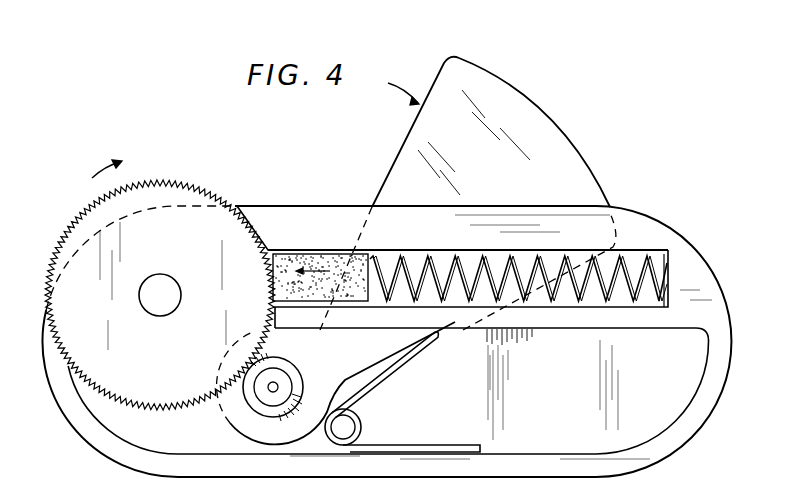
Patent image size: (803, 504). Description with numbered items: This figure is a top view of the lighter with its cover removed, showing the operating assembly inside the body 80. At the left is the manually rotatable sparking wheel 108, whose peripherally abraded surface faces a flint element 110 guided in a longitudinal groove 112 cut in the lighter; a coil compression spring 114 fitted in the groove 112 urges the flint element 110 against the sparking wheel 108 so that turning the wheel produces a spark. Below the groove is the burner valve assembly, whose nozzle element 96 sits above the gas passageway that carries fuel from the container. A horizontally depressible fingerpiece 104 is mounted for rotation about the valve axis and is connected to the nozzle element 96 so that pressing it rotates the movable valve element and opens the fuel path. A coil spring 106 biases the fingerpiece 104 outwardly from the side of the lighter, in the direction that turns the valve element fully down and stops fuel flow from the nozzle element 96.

The body 80 is at (730, 292).
The nozzle element 96 is at (253, 400).
The fingerpiece 104 is at (407, 137).
The coil spring 106 is at (363, 425).
The sparking wheel 108 is at (79, 222).
The flint element 110 is at (287, 262).
The longitudinal groove 112 is at (328, 250).
The coil compression spring 114 is at (657, 254).